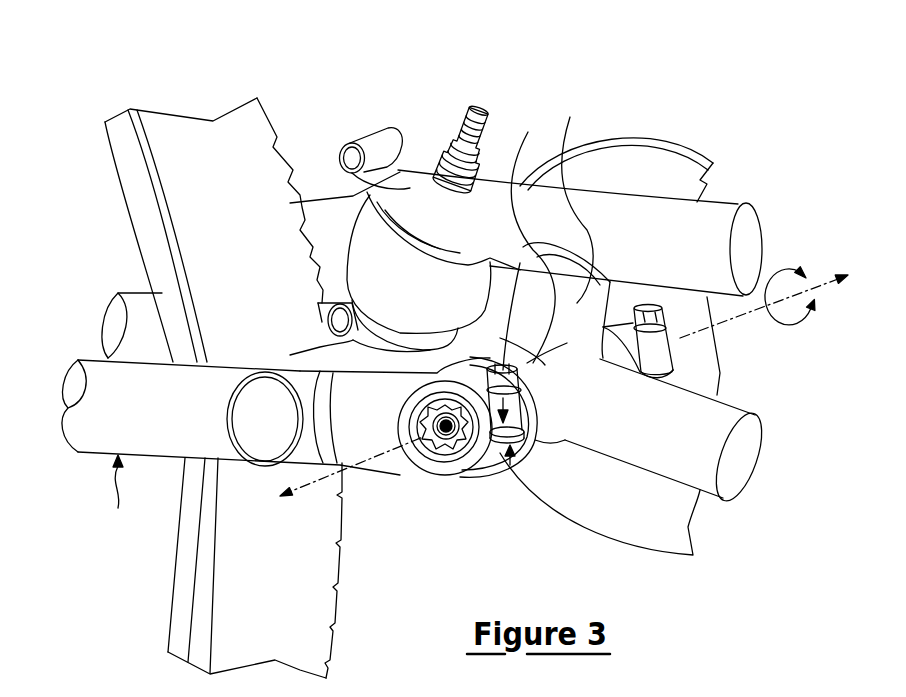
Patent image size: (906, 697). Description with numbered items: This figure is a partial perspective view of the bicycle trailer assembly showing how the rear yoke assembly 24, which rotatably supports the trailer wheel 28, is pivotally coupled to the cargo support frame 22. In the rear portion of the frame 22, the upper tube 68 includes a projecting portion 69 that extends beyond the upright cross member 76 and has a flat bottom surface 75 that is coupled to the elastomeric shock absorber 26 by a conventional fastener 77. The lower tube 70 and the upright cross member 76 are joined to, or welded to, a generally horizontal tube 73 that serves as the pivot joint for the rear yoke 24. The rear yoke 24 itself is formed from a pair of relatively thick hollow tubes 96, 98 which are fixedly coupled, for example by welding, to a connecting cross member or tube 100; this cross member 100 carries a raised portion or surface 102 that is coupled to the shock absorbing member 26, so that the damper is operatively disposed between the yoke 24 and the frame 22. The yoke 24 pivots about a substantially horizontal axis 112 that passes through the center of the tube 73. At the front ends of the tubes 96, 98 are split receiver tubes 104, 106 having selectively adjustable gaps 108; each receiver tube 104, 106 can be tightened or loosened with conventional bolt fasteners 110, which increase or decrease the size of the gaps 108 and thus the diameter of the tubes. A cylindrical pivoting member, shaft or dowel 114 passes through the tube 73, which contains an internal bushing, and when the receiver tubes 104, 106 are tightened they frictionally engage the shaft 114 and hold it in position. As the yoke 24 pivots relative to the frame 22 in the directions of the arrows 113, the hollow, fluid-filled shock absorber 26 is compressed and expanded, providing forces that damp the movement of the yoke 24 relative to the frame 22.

The cargo support frame 22 is at (738, 204).
The rear yoke assembly 24 is at (114, 495).
The shock absorber 26 is at (401, 302).
The trailer wheel 28 is at (257, 98).
The upper tube 68 is at (608, 220).
The projecting portion 69 is at (408, 187).
The lower tube 70 is at (760, 455).
The horizontal tube 73 is at (510, 183).
The flat bottom surface 75 is at (300, 210).
The upright cross member 76 is at (558, 180).
The fastener 77 is at (478, 100).
The hollow tube 96 is at (98, 385).
The hollow tube 98 is at (143, 310).
The cross member 100 is at (297, 365).
The raised portion 102 is at (320, 292).
The split receiver tube 104 is at (520, 392).
The split receiver tube 106 is at (660, 355).
The adjustable gap 108 is at (532, 442).
The bolt fastener 110 is at (647, 317).
The horizontal axis 112 is at (820, 275).
The arrows 113 is at (775, 262).
The pivot shaft 114 is at (412, 462).